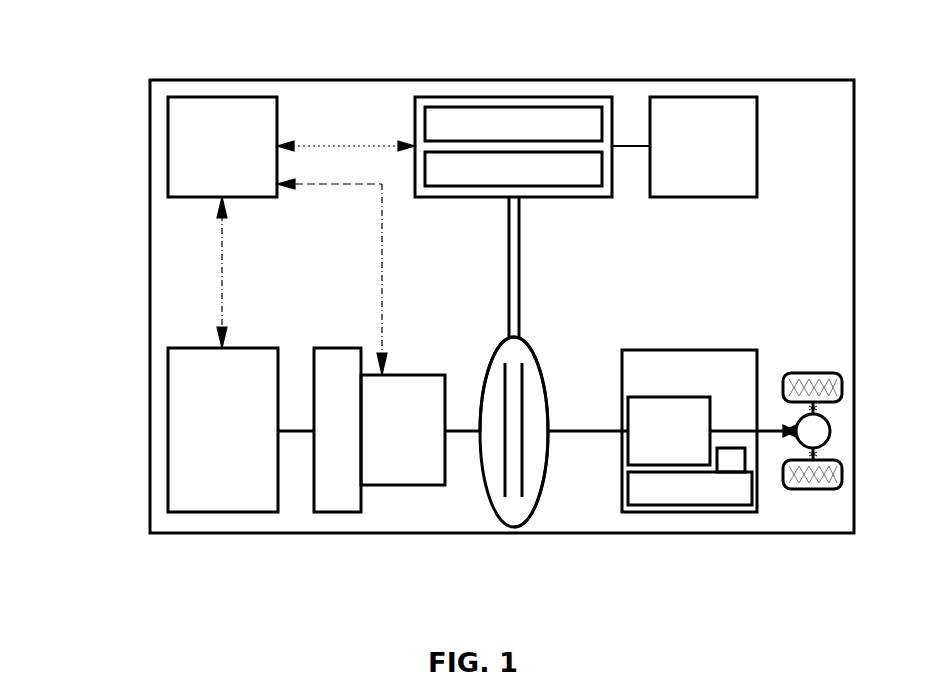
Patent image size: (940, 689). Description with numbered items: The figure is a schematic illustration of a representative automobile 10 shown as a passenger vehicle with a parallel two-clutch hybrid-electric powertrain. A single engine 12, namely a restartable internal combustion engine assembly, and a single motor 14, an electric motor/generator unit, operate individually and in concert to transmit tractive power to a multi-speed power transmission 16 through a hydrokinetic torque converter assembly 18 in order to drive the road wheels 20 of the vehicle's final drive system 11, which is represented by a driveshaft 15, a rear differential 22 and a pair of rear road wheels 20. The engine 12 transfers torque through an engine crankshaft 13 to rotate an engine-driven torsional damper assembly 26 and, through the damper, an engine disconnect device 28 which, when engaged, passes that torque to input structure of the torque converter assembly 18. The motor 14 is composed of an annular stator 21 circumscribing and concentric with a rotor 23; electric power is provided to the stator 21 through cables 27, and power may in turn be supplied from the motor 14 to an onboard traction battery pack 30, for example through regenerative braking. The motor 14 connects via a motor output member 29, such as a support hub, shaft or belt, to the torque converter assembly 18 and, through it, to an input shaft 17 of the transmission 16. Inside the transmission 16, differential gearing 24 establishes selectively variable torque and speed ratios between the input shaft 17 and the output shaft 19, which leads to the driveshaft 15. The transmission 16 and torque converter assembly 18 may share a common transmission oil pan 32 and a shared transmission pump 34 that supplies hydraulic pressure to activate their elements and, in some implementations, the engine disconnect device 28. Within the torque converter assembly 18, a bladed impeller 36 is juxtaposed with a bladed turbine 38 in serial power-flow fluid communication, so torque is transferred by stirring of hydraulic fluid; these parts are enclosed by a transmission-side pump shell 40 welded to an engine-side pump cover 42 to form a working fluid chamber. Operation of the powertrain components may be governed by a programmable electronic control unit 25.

The automobile 10 is at (134, 58).
The final drive system 11 is at (836, 255).
The engine 12 is at (180, 348).
The engine crankshaft 13 is at (292, 431).
The motor 14 is at (432, 97).
The driveshaft 15 is at (772, 431).
The multi-speed power transmission 16 is at (633, 350).
The input shaft 17 is at (574, 431).
The hydrokinetic torque converter assembly 18 is at (535, 483).
The output shaft 19 is at (457, 431).
The road wheels 20 is at (808, 373).
The stator 21 is at (415, 113).
The rear differential 22 is at (832, 428).
The rotor 23 is at (415, 158).
The differential gearing 24 is at (668, 397).
The electronic control unit 25 is at (180, 97).
The torsional damper assembly 26 is at (352, 348).
The cables 27 is at (624, 142).
The engine disconnect device 28 is at (416, 375).
The motor output member 29 is at (507, 222).
The traction battery pack 30 is at (677, 97).
The transmission oil pan 32 is at (666, 488).
The transmission pump 34 is at (727, 460).
The impeller 36 is at (500, 492).
The turbine 38 is at (522, 490).
The pump shell 40 is at (545, 460).
The pump cover 42 is at (485, 482).